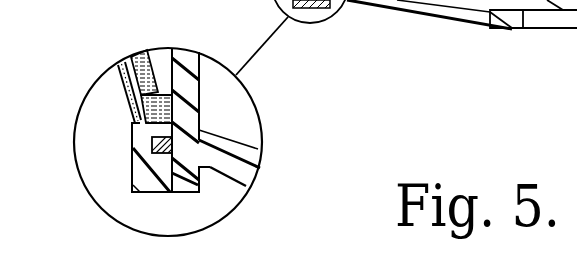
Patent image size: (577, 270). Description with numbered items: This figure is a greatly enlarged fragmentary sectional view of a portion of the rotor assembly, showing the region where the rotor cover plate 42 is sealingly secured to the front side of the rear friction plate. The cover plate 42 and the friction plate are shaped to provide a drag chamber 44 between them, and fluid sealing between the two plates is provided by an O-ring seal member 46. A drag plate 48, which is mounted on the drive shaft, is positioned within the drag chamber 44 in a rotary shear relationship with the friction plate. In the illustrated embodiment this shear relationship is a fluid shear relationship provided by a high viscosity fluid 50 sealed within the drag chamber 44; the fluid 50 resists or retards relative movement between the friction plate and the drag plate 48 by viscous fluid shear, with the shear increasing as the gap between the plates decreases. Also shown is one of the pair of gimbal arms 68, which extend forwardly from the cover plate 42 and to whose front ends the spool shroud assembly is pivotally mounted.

The rotor cover plate 42 is at (199, 90).
The drag chamber 44 is at (150, 119).
The O-ring seal member 46 is at (133, 148).
The drag plate 48 is at (137, 62).
The high viscosity fluid 50 is at (160, 50).
The gimbal arms 68 is at (232, 169).